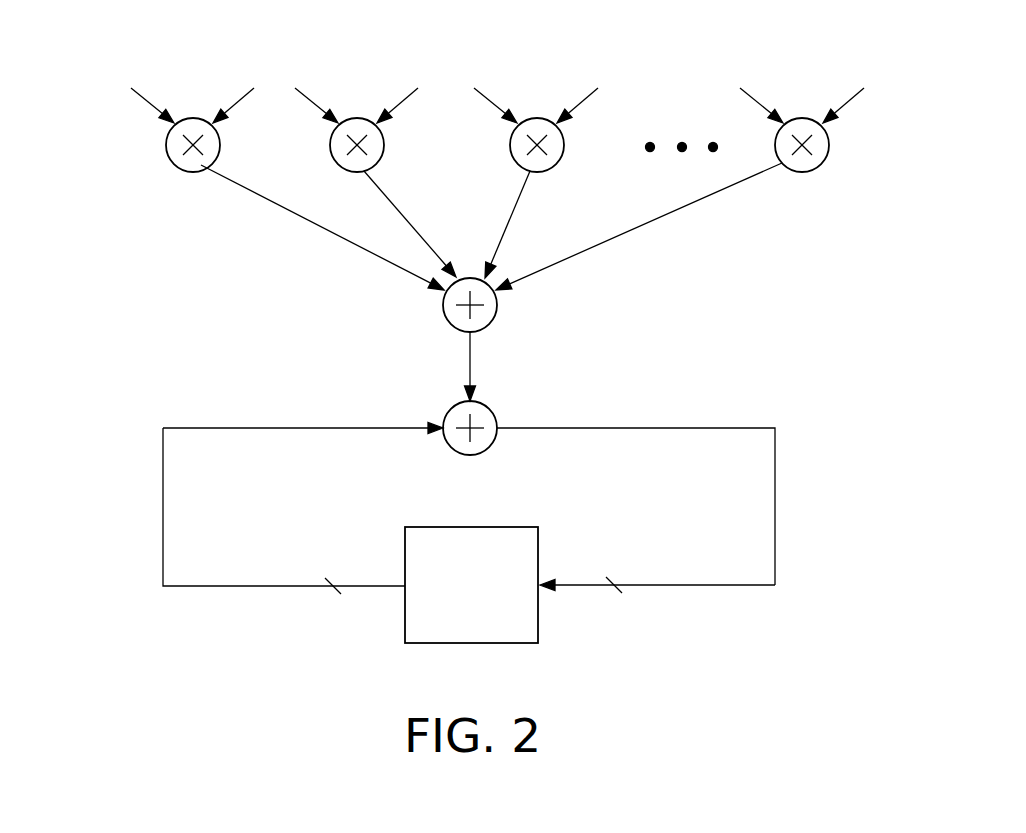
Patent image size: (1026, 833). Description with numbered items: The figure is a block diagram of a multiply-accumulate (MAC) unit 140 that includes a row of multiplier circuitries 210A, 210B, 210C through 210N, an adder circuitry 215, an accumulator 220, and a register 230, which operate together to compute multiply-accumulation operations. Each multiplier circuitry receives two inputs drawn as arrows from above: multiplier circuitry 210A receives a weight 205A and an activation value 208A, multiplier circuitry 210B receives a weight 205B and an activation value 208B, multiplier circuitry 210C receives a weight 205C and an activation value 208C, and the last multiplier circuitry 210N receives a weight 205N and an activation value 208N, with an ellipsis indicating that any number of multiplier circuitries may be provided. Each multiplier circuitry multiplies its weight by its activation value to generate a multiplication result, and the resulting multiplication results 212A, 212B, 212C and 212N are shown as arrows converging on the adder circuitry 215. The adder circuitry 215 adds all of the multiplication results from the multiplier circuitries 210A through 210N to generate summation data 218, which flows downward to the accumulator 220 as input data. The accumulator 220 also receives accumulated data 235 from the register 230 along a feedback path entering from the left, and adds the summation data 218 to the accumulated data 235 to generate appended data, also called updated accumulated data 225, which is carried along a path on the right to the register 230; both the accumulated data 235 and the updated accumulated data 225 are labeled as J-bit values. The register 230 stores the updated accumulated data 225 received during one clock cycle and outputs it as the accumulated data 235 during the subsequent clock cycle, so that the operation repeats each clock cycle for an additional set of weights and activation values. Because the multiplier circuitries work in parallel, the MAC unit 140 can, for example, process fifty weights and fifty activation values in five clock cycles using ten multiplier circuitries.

The multiply-accumulate (MAC) unit 140 is at (76, 18).
The weight 205A is at (153, 92).
The activation value 208A is at (229, 92).
The weight 205B is at (317, 92).
The activation value 208B is at (394, 92).
The weight 205C is at (497, 92).
The activation value 208C is at (575, 92).
The weight 205N is at (763, 92).
The activation value 208N is at (840, 92).
The multiplier circuitry 210A is at (166, 150).
The multiplier circuitry 210B is at (330, 150).
The multiplier circuitry 210C is at (510, 150).
The multiplier circuitry 210N is at (822, 163).
The multiplication result 212A is at (246, 204).
The multiplication result 212B is at (371, 190).
The multiplication result 212C is at (528, 190).
The multiplication result 212N is at (695, 210).
The adder circuitry 215 is at (493, 316).
The summation data 218 is at (471, 352).
The accumulator 220 is at (485, 451).
The appended data (updated accumulated data) 225 is at (752, 586).
The register 230 is at (494, 611).
The accumulated data 235 is at (246, 587).